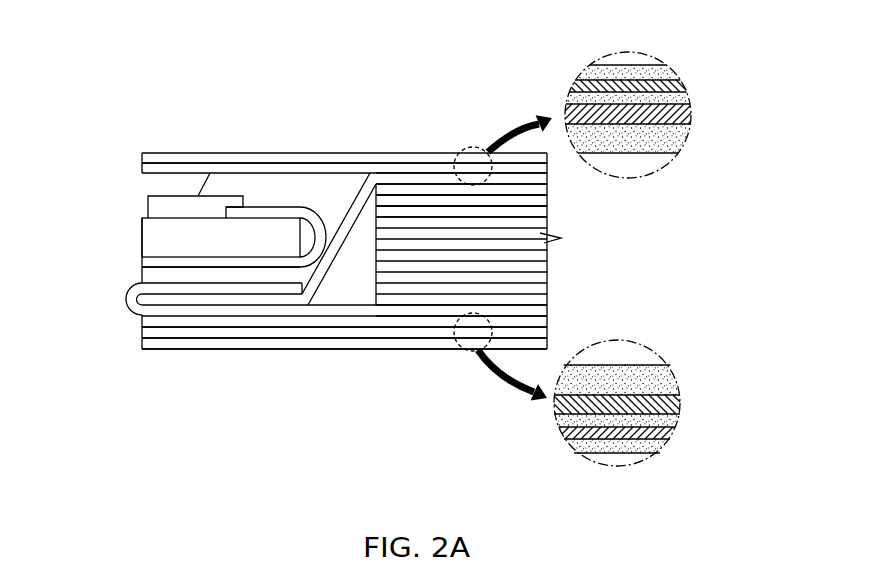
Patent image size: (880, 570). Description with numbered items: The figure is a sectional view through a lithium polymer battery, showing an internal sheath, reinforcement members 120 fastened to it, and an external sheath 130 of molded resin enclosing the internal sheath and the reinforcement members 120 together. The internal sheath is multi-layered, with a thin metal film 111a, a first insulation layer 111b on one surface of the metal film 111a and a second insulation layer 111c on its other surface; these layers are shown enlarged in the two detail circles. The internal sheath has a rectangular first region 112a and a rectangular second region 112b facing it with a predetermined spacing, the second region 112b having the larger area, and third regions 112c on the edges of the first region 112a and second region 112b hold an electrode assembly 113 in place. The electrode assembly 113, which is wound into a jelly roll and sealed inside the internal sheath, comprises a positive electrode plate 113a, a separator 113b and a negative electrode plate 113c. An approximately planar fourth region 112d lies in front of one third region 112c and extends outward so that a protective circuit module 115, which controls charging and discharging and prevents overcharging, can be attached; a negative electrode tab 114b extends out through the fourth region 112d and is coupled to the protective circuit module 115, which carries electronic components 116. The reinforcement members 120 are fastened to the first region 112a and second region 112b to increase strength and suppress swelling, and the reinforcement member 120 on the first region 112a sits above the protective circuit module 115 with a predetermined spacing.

The external sheath 130 is at (141, 159).
The reinforcement member 120 is at (141, 167).
The protective circuit module 115 is at (141, 240).
The electronic component 116 is at (143, 273).
The negative electrode tab 114b is at (125, 300).
The first region 112a is at (411, 160).
The second region 112b is at (412, 343).
The third region 112c is at (353, 208).
The fourth region 112d is at (230, 281).
The electrode assembly 113 is at (660, 186).
The positive electrode plate 113a is at (547, 189).
The separator 113b is at (547, 201).
The negative electrode plate 113c is at (547, 214).
The metal film 111a is at (685, 115).
The first insulation layer 111b is at (687, 98).
The second insulation layer 111c is at (677, 138).